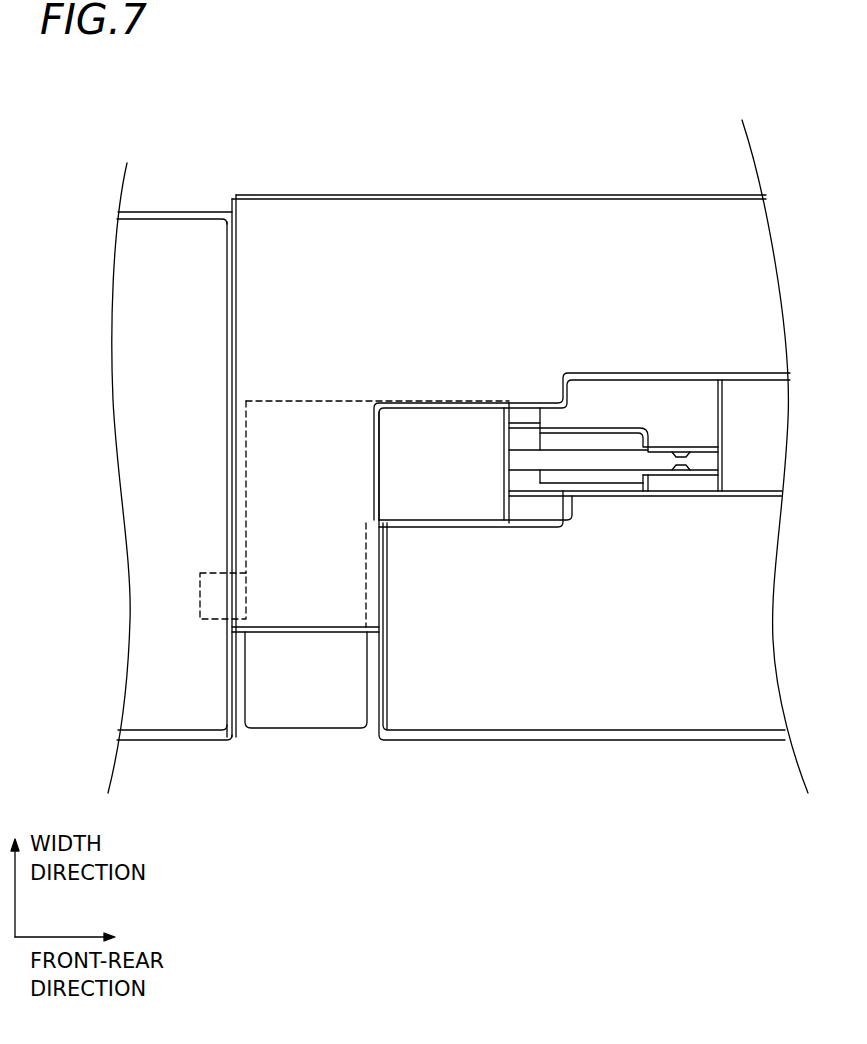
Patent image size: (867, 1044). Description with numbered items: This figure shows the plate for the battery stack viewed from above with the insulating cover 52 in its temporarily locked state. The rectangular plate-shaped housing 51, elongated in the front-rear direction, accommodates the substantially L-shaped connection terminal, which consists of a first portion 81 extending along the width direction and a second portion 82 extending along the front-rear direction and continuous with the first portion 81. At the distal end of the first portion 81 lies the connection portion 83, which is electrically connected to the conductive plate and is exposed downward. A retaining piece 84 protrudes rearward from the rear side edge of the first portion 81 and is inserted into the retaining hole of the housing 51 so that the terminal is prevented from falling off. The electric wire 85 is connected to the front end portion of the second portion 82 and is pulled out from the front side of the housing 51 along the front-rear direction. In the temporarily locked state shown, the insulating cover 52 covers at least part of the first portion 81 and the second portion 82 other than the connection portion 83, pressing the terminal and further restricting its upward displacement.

The housing 51 is at (172, 478).
The insulating cover 52 is at (361, 322).
The first portion 81 is at (345, 585).
The second portion 82 is at (443, 455).
The connection portion 83 is at (303, 695).
The retaining piece 84 is at (215, 605).
The electric wire 85 is at (600, 457).